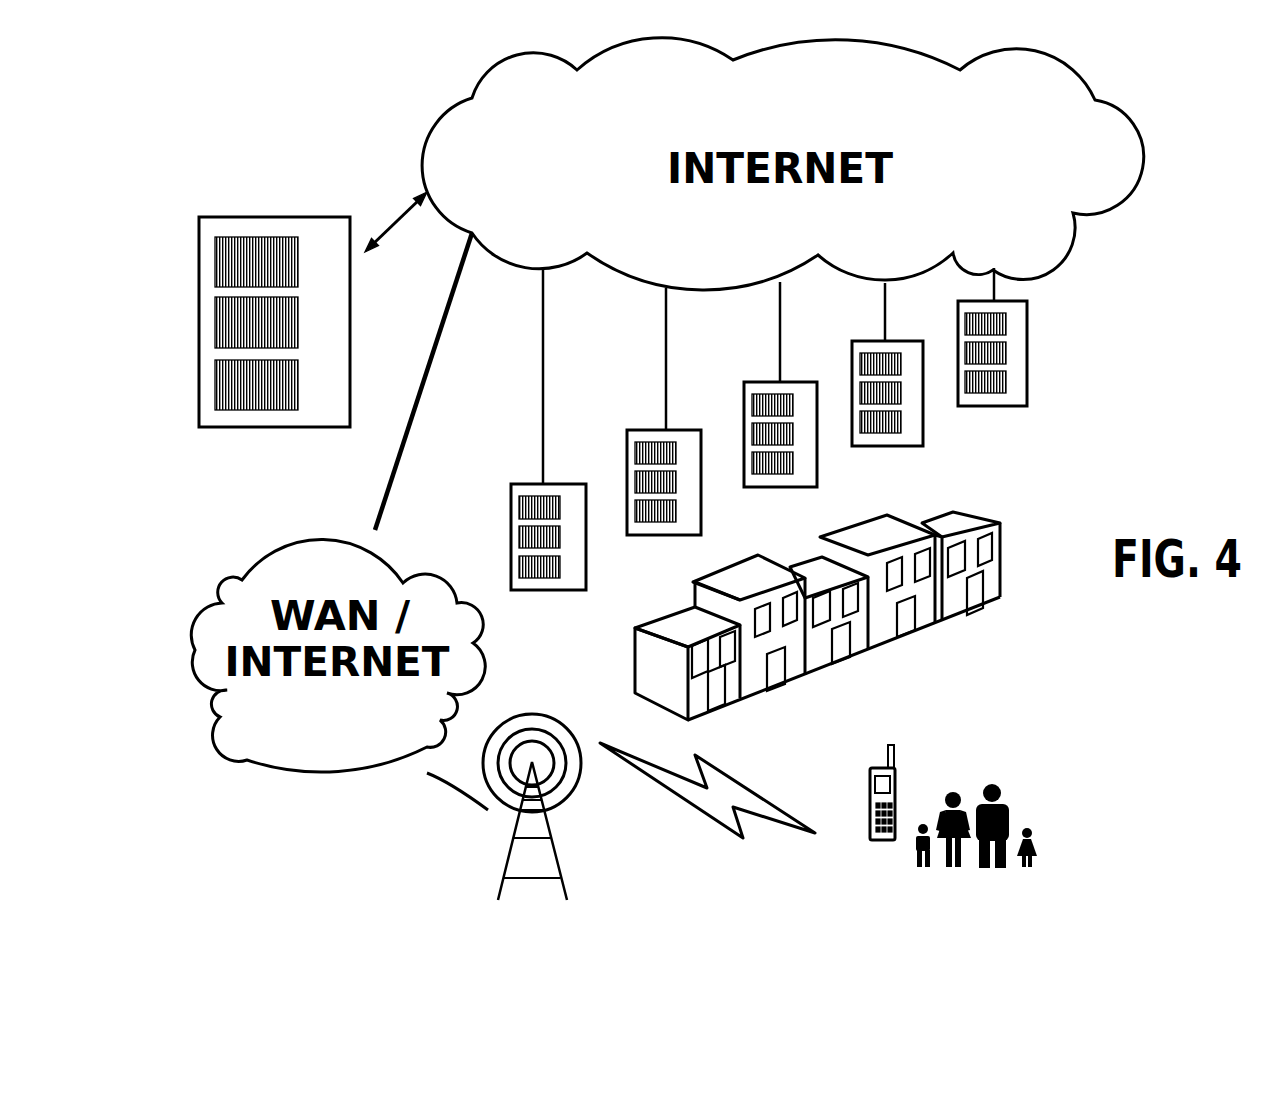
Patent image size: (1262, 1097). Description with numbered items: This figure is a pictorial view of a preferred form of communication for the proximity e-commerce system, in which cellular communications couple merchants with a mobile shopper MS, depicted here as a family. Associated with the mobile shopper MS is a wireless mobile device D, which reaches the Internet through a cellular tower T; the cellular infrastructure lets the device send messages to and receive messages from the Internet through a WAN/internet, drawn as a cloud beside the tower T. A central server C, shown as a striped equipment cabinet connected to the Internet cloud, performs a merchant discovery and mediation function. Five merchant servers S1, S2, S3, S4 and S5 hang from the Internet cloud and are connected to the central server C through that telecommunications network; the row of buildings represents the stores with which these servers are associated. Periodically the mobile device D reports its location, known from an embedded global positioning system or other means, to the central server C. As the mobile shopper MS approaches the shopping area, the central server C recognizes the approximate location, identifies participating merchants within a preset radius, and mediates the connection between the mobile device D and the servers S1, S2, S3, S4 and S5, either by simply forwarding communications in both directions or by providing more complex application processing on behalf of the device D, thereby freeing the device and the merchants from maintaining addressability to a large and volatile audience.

The central server C is at (238, 437).
The server S1 is at (523, 429).
The server S2 is at (640, 411).
The server S3 is at (757, 384).
The server S4 is at (864, 364).
The server S5 is at (967, 337).
The cellular tower T is at (487, 852).
The wireless mobile device D is at (872, 820).
The mobile shopper MS is at (1012, 797).